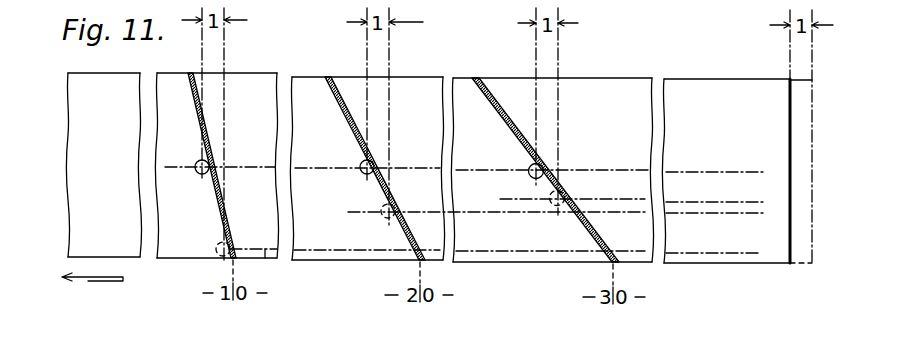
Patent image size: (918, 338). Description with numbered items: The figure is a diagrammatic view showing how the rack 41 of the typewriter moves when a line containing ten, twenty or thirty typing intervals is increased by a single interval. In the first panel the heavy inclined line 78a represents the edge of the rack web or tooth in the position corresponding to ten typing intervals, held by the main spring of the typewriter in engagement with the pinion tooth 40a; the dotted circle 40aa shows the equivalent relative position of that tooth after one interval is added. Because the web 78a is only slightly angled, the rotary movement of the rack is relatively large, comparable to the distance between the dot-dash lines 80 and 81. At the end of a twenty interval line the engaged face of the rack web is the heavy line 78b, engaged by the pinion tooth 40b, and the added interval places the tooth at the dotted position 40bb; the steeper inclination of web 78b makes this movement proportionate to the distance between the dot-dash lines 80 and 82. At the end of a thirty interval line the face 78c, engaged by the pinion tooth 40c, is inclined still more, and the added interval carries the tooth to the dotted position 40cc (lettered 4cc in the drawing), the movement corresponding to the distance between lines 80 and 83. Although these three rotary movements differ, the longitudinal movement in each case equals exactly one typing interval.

The rack 41 is at (170, 250).
The rack web or tooth edge 78a is at (208, 141).
The rack web or tooth engaged face 78b is at (357, 127).
The rack web or tooth engaged face 78c is at (504, 112).
The dot-dash line 80 is at (250, 166).
The dot-dash line 81 is at (268, 262).
The dot-dash line 82 is at (355, 210).
The dot-dash line 83 is at (508, 200).
The pinion tooth 40a is at (203, 175).
The pinion tooth relative position 40aa is at (214, 256).
The pinion tooth 40b is at (375, 166).
The pinion tooth relative position 40bb is at (416, 190).
The pinion tooth 40c is at (545, 164).
The follower pin displaced position (40cc) 4cc is at (564, 192).
The pinion tooth relative position 40cc is at (591, 189).